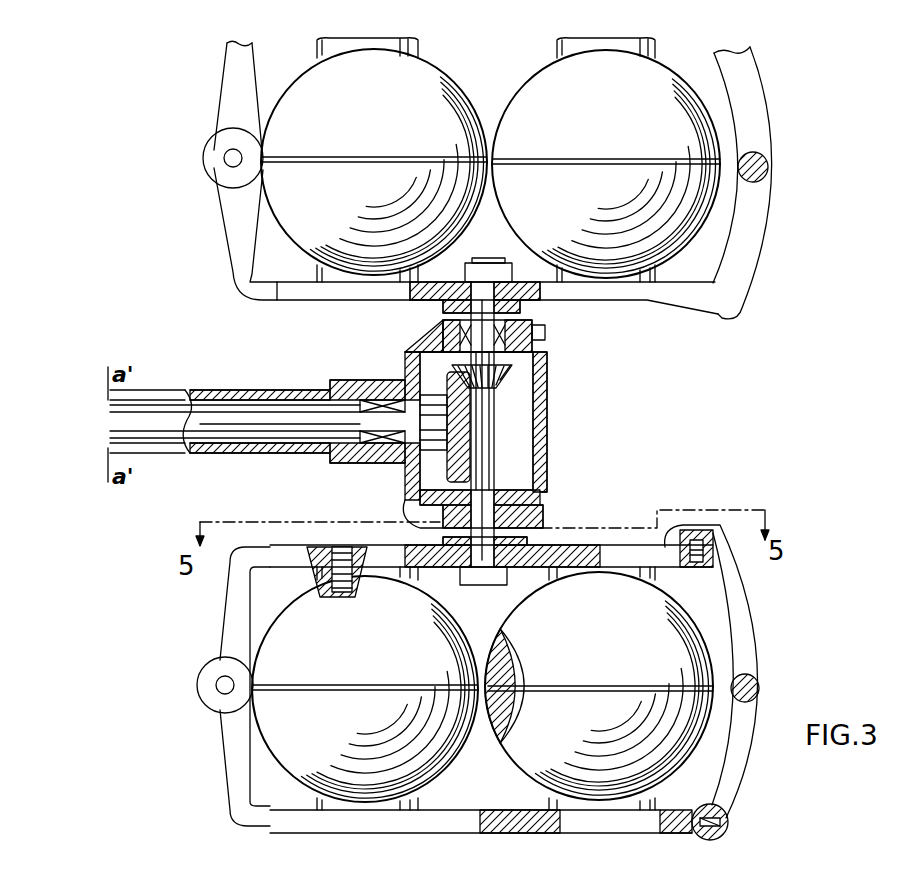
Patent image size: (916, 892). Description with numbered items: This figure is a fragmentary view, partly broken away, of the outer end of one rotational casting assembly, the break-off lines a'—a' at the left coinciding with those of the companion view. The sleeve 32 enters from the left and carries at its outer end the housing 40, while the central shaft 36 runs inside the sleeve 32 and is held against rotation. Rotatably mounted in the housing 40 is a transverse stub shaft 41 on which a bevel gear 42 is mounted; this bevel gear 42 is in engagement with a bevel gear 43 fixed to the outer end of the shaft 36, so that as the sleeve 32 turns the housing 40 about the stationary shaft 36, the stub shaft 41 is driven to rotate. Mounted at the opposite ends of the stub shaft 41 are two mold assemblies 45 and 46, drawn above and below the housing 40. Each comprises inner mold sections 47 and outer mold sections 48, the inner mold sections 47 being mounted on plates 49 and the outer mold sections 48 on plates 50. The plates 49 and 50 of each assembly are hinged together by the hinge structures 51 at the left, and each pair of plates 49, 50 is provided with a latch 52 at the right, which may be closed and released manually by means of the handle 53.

The sleeve 32 is at (242, 389).
The central shaft 36 is at (300, 413).
The housing 40 is at (437, 358).
The stub shaft 41 is at (488, 450).
The bevel gear 42 is at (496, 392).
The bevel gear 43 is at (452, 455).
The mold assembly 45 is at (784, 171).
The mold assembly 46 is at (806, 638).
The inner mold sections 47 is at (520, 218).
The outer mold sections 48 is at (530, 92).
The plates 49 is at (606, 298).
The plates 50 is at (478, 825).
The hinge structures 51 is at (210, 160).
The latch 52 is at (746, 299).
The handle 53 is at (770, 153).